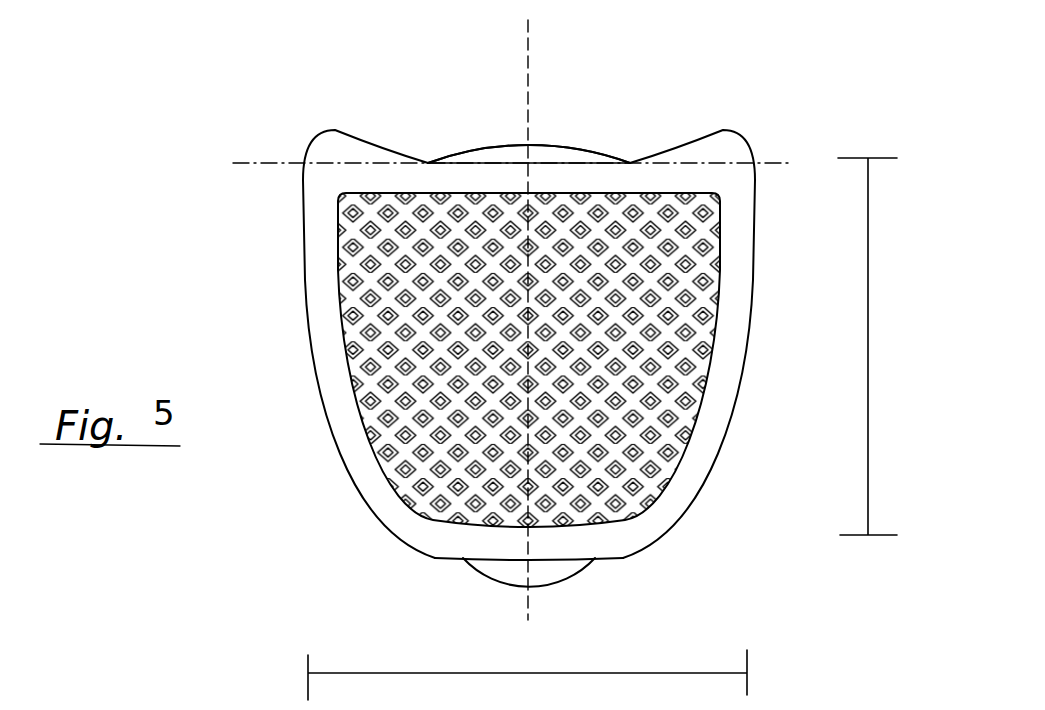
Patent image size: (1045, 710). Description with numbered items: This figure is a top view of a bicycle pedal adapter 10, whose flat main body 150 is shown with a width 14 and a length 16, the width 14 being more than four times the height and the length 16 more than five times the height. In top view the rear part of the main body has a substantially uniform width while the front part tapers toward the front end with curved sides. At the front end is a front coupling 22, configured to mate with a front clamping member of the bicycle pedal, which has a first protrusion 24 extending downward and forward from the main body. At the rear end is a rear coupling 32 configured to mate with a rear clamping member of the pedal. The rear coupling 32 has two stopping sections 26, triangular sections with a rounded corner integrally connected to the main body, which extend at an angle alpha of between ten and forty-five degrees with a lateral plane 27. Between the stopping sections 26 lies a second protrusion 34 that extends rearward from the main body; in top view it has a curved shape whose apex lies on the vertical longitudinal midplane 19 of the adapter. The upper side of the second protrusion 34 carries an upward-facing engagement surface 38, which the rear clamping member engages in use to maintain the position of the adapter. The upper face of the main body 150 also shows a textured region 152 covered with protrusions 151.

The orthotic insert 10 is at (213, 205).
The width 14 is at (672, 668).
The length 16 is at (870, 340).
The vertical longitudinal midplane 19 is at (532, 608).
The front coupling 22 is at (467, 577).
The first protrusion 24 is at (505, 568).
The stopping sections 26 is at (368, 137).
The lateral plane 27 is at (247, 163).
The rear coupling 32 is at (557, 130).
The second protrusion 34 is at (583, 147).
The engagement surface 38 is at (507, 157).
The base body 150 is at (438, 558).
The protrusions 151 is at (393, 282).
The textured panel 152 is at (423, 445).